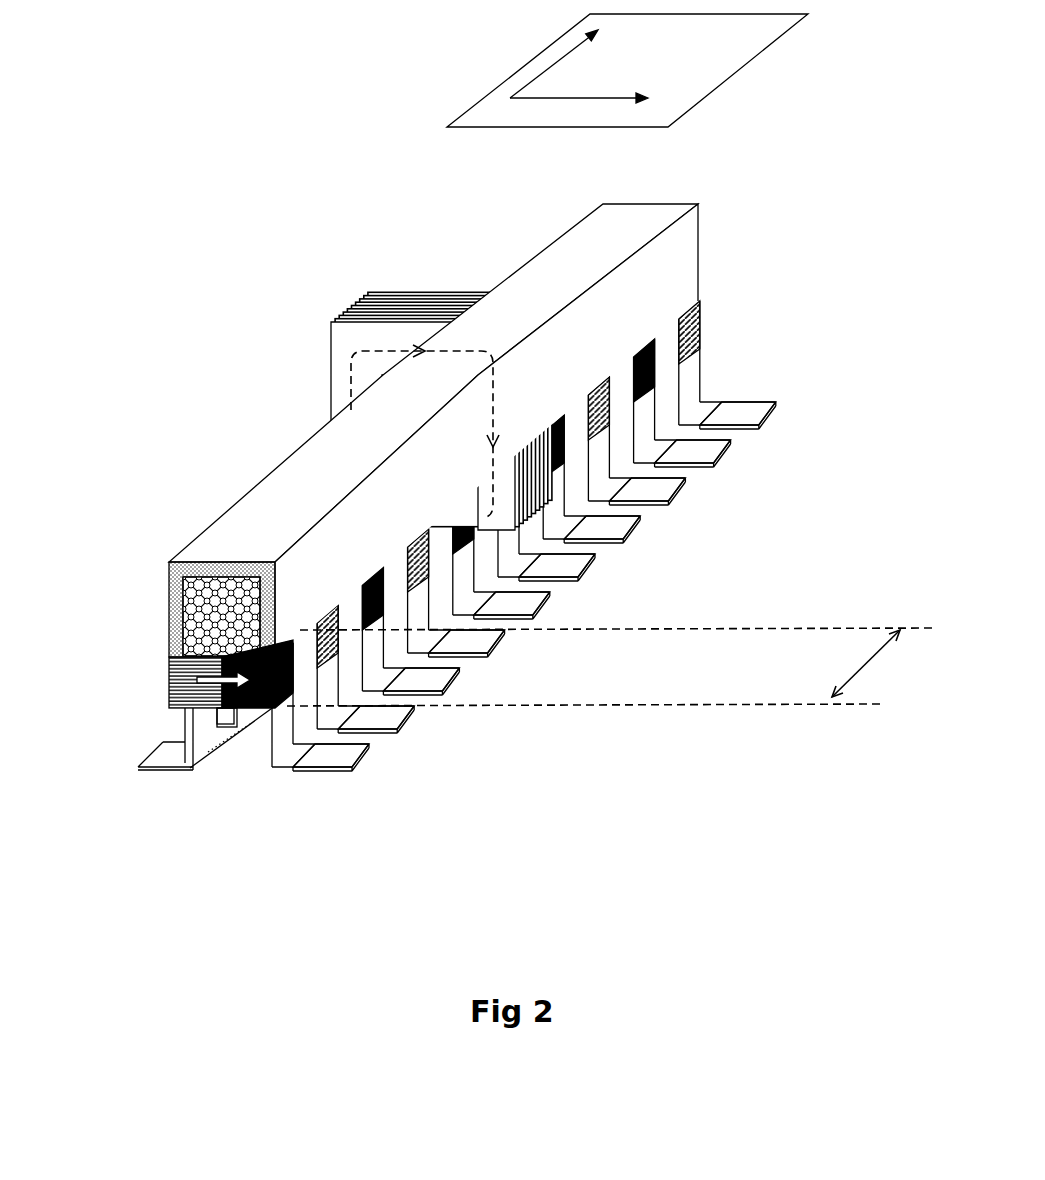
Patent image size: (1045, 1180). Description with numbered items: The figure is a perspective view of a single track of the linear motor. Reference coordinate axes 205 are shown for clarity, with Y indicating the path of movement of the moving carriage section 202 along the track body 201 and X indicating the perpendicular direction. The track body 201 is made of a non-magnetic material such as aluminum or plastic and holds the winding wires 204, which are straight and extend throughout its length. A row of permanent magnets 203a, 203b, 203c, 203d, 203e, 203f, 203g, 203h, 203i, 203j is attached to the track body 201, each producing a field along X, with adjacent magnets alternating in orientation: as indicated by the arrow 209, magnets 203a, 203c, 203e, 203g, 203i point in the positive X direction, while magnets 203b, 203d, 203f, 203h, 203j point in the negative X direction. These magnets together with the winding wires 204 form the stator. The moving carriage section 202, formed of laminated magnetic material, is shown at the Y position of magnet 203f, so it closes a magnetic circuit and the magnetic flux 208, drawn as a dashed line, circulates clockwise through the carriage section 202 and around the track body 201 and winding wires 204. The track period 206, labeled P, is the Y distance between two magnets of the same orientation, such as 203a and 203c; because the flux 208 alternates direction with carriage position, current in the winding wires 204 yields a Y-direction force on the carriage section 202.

The track body 201 is at (583, 248).
The moving carriage section 202 is at (347, 308).
The permanent magnet 203a is at (290, 690).
The permanent magnet 203b is at (325, 662).
The permanent magnet 203c is at (370, 626).
The permanent magnet 203d is at (412, 590).
The permanent magnet 203e is at (458, 553).
The permanent magnet 203f is at (520, 523).
The permanent magnet 203g is at (553, 470).
The permanent magnet 203h is at (597, 437).
The permanent magnet 203i is at (638, 400).
The permanent magnet 203j is at (682, 363).
The winding wires 204 is at (198, 602).
The reference coordinate axes 205 is at (587, 69).
The track period P 206 is at (855, 647).
The magnetic flux 208 is at (347, 365).
The arrow 209 is at (207, 680).